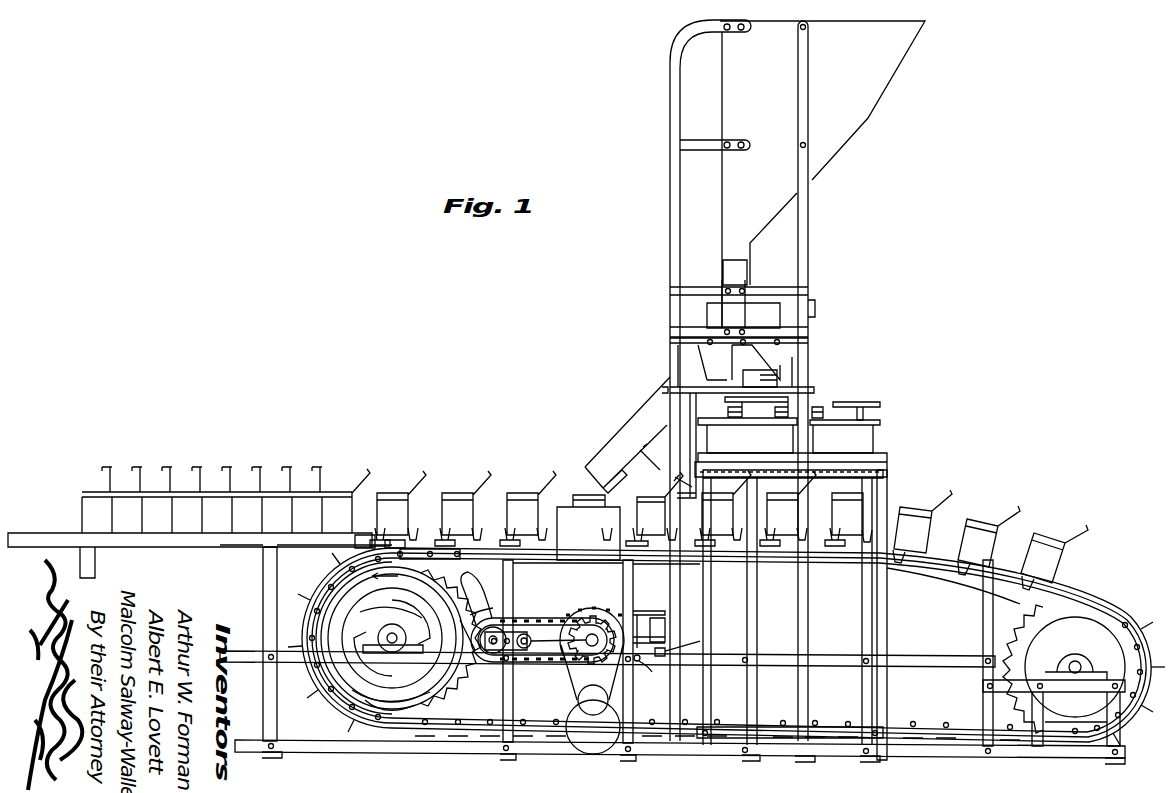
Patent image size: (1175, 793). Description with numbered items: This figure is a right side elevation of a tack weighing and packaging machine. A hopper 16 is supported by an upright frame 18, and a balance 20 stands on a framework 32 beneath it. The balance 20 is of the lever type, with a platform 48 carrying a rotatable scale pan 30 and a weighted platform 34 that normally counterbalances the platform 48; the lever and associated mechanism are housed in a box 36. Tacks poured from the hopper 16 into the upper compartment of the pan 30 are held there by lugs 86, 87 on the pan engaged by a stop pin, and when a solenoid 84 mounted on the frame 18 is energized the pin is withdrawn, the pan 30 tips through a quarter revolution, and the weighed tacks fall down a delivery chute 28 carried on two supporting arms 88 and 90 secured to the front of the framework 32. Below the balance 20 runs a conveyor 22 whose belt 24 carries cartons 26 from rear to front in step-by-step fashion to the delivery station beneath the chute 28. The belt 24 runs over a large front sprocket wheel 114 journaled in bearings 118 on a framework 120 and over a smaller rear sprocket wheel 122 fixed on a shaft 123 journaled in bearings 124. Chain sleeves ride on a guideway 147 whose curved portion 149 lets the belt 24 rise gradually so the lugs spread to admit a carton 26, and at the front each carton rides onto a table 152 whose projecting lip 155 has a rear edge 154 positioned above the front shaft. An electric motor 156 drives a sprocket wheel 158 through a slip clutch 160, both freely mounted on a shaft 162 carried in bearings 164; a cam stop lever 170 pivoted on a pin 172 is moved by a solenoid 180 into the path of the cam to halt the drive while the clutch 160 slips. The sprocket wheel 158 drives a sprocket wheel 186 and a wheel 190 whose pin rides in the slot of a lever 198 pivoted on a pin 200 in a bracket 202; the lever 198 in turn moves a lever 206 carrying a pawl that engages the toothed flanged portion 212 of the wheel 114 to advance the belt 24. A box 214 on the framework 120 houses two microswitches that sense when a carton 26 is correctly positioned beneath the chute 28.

The hopper 16 is at (892, 77).
The upright frame 18 is at (672, 352).
The balance 20 is at (914, 422).
The conveyor 22 is at (1103, 564).
The belt 24 is at (1110, 613).
The cartons 26 is at (1050, 541).
The delivery chute 28 is at (626, 427).
The scale pan 30 is at (707, 313).
The framework 32 is at (888, 613).
The platform 34 is at (879, 402).
The box 36 is at (862, 442).
The platform 48 is at (768, 403).
The solenoid 84 is at (780, 380).
The lug 86 is at (708, 344).
The lug 87 is at (782, 343).
The supporting arm 88 is at (657, 469).
The supporting arm 90 is at (701, 441).
The front sprocket wheel 114 is at (341, 601).
The bearings 118 is at (380, 618).
The framework 120 is at (246, 652).
The sprocket wheel 122 is at (1040, 646).
The shaft 123 is at (1076, 660).
The bearings 124 is at (1063, 693).
The guideway 147 is at (662, 611).
The curved portion 149 is at (960, 578).
The table 152 is at (50, 541).
The rear edge 154 is at (393, 542).
The projecting lip 155 is at (368, 542).
The electric motor 156 is at (603, 716).
The sprocket wheel 158 is at (592, 633).
The slip clutch 160 is at (621, 626).
The shaft 162 is at (585, 638).
The bearings 164 is at (592, 696).
The cam stop lever 170 is at (666, 652).
The pin 172 is at (639, 661).
The solenoid 180 is at (663, 606).
The sprocket wheel 186 is at (512, 617).
The wheel 190 is at (491, 614).
The lever 198 is at (475, 686).
The pin 200 is at (526, 634).
The bracket 202 is at (522, 652).
The lever 206 is at (398, 634).
The flanged portion 212 is at (393, 683).
The box 214 is at (585, 509).